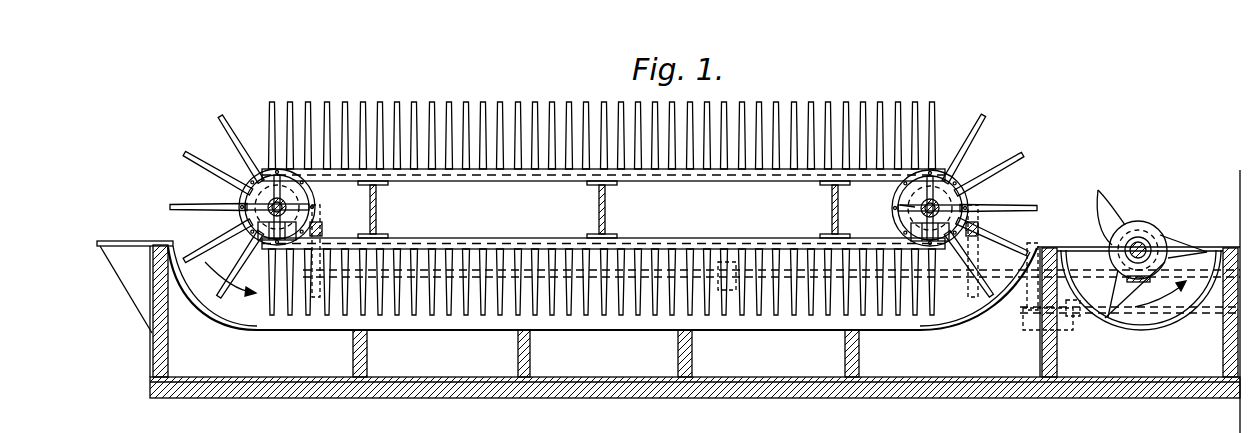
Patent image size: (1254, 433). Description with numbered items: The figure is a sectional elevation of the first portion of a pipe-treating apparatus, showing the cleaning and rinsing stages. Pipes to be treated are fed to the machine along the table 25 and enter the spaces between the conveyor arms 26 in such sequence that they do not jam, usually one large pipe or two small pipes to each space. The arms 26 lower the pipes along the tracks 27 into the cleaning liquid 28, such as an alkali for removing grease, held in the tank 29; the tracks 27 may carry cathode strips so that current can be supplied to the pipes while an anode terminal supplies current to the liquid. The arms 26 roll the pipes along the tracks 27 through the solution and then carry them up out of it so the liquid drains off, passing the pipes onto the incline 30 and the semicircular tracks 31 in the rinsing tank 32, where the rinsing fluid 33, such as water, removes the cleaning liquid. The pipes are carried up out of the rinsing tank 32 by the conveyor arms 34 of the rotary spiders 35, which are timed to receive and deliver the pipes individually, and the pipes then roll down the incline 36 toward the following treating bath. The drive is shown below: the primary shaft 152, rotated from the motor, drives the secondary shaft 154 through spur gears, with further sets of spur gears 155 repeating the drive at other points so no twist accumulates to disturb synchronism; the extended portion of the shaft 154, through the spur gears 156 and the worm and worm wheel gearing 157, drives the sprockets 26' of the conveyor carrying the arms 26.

The table 25 is at (120, 241).
The conveyor arms 26 is at (632, 214).
The sprockets 26' is at (883, 205).
The tracks 27 is at (231, 308).
The cleaning liquid 28 is at (328, 357).
The tank 29 is at (160, 346).
The incline 30 is at (1055, 248).
The semicircular tracks 31 is at (1156, 322).
The rinsing tank 32 is at (1093, 242).
The rinsing fluid 33 is at (1118, 355).
The conveyor arms 34 is at (1118, 215).
The rotary spiders 35 is at (1148, 229).
The incline 36 is at (1231, 247).
The primary shaft 152 is at (1072, 316).
The secondary shaft 154 is at (601, 273).
The spur gears 155 is at (1022, 300).
The spur gears 156 is at (314, 230).
The worm and worm wheel gearing 157 is at (245, 197).